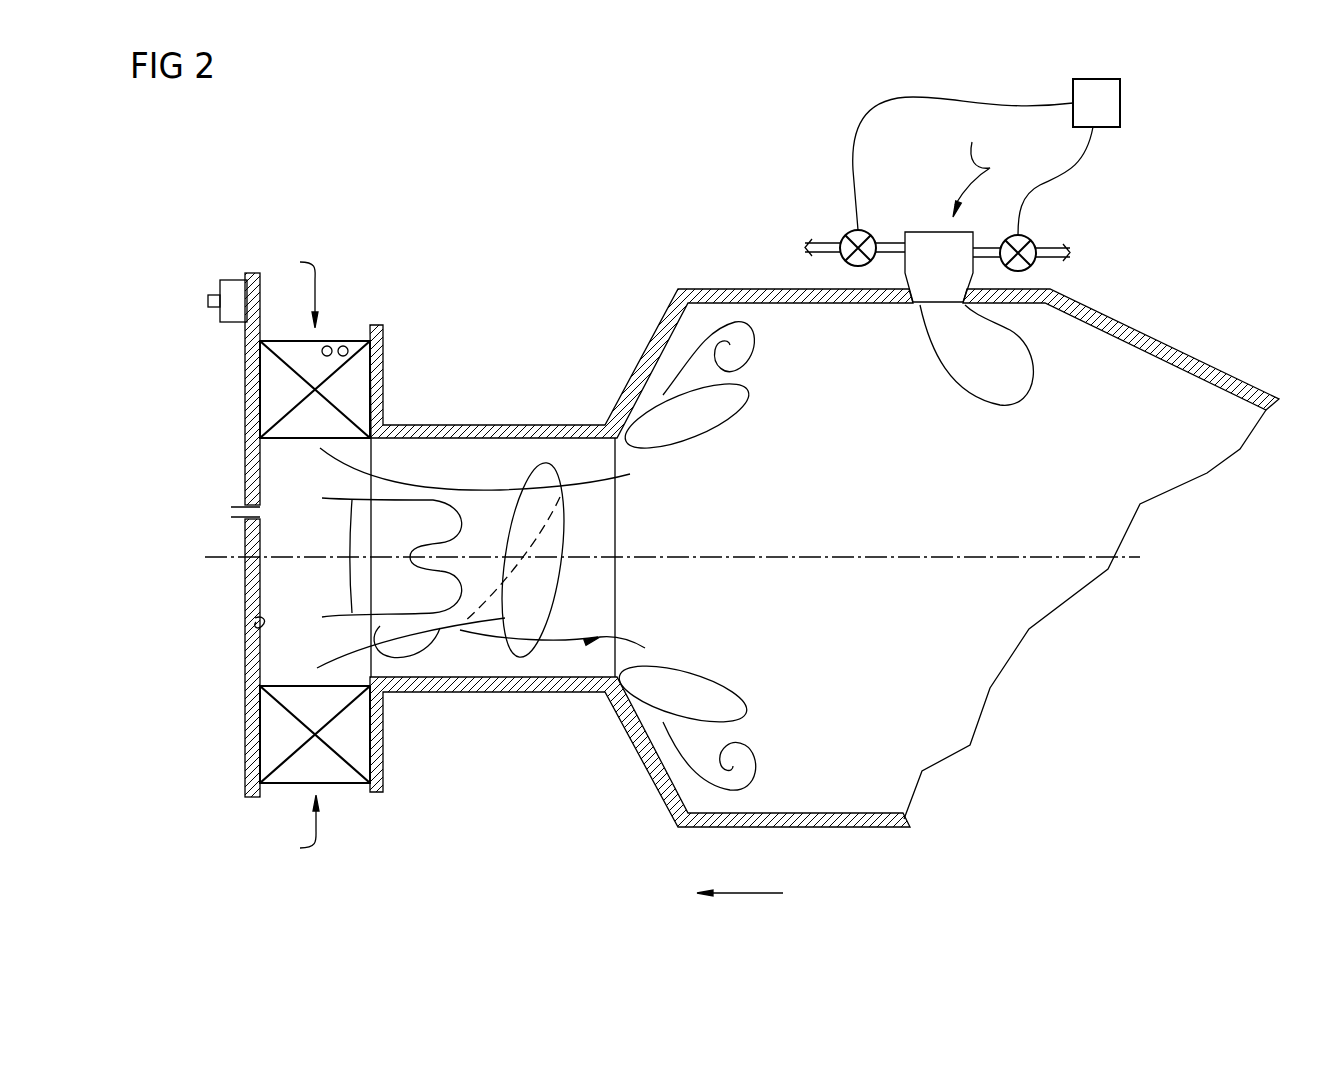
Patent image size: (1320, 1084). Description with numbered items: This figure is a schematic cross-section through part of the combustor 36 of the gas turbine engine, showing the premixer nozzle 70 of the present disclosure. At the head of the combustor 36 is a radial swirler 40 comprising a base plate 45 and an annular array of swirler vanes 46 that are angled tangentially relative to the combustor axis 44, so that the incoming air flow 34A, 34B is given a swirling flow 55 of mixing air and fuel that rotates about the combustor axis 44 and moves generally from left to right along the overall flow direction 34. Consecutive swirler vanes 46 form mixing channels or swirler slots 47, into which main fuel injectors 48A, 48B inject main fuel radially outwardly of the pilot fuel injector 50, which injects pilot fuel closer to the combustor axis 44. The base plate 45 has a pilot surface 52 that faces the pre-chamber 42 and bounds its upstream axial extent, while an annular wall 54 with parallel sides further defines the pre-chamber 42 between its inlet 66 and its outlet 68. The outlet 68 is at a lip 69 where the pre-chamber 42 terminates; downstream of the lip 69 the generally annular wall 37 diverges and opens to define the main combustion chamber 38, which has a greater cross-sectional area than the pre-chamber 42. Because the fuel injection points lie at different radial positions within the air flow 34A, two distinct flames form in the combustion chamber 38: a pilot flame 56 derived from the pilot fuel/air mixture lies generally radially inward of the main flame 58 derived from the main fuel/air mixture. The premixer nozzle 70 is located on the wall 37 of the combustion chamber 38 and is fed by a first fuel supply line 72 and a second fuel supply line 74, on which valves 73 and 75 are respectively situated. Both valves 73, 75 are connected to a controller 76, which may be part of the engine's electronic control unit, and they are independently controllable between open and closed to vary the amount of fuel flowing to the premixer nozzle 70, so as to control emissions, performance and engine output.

The air flow 34 is at (750, 895).
The air flow 34A is at (275, 553).
The fuel flow 34B is at (967, 164).
The combustor 36 is at (713, 223).
The inner wall 37 is at (640, 784).
The main combustion chamber 38 is at (860, 378).
The radial swirler 40 is at (270, 562).
The pre-chamber 42 is at (518, 679).
The combustor axis 44 is at (205, 557).
The base plate 45 is at (252, 662).
The swirler vanes 46 is at (265, 717).
The swirler slots 47 is at (360, 392).
The main fuel injector 48A is at (208, 301).
The main fuel injector 48B is at (330, 345).
The pilot fuel injector 50 is at (235, 512).
The pilot surface 52 is at (255, 620).
The annular wall 54 is at (578, 692).
The swirling flow 55 is at (428, 650).
The pilot flame 56 is at (457, 510).
The main flame 58 is at (740, 408).
The inlet 66 is at (372, 470).
The outlet 68 is at (622, 460).
The lip 69 is at (620, 678).
The premixer nozzle 70 is at (923, 210).
The first fuel supply line 72 is at (1072, 255).
The valve 73 is at (1036, 240).
The second fuel supply line 74 is at (808, 250).
The valve 75 is at (846, 233).
The controller 76 is at (1125, 103).